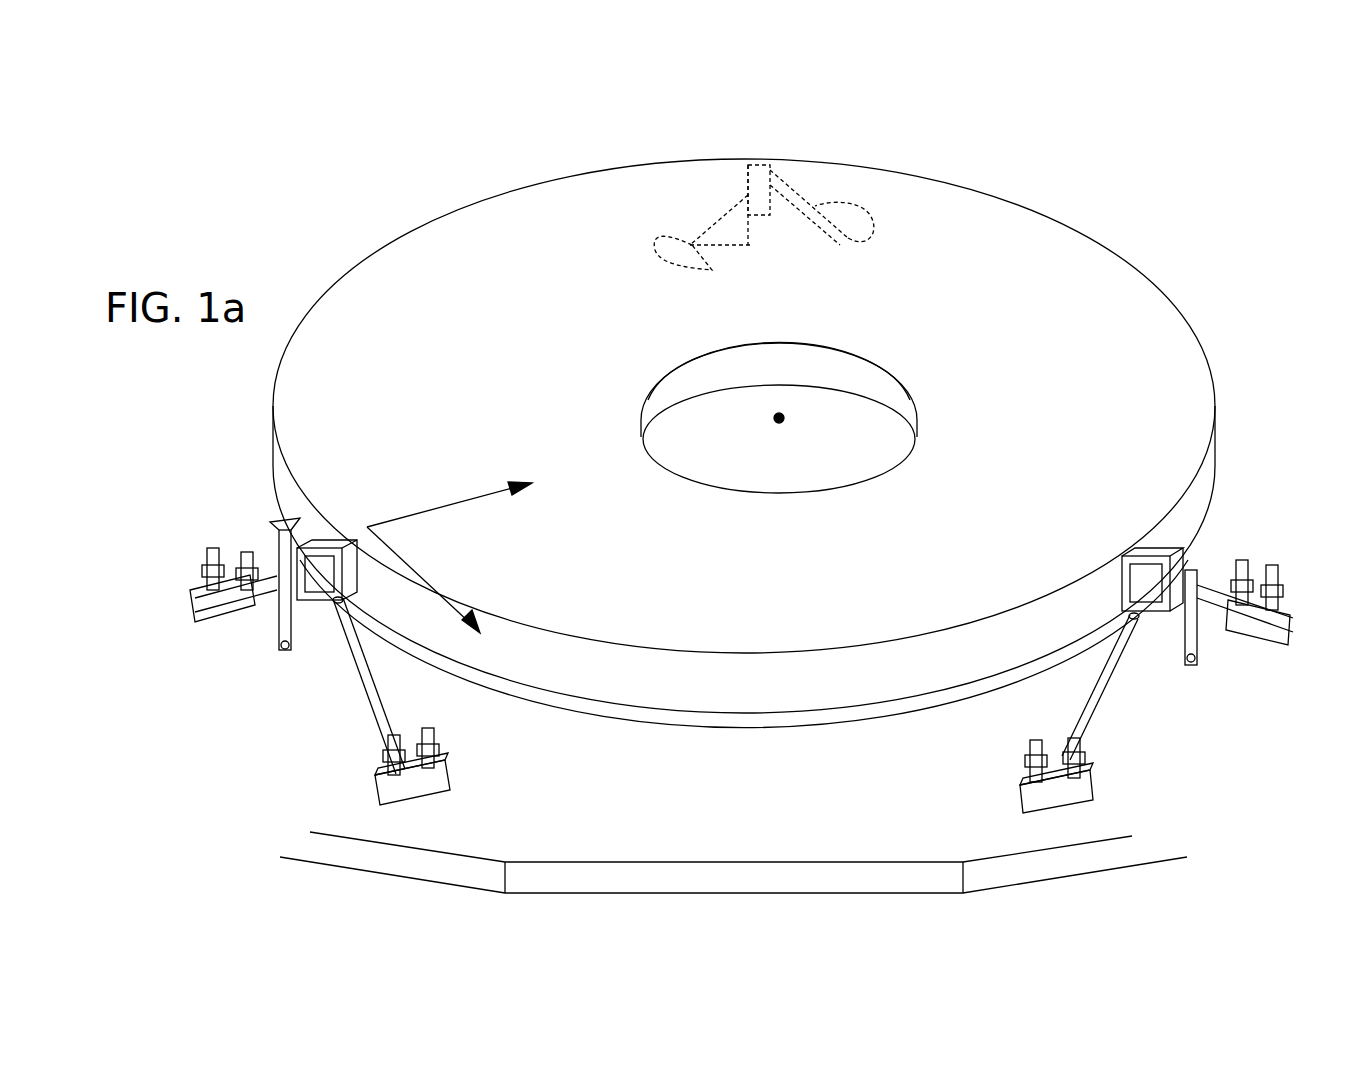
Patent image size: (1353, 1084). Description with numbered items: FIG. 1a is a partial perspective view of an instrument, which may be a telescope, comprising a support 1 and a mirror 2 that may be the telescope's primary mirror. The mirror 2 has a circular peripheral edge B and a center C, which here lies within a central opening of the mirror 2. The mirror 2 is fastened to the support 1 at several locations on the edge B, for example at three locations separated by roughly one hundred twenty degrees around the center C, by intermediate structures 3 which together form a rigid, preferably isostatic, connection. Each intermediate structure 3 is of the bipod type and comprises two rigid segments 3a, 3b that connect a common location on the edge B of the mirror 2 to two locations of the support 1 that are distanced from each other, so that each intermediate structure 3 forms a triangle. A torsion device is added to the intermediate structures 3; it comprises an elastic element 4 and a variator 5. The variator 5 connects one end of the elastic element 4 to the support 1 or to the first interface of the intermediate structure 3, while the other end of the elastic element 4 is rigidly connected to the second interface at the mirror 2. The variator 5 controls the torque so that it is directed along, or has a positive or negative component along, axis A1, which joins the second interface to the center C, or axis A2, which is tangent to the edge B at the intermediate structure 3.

The support 1 is at (1004, 838).
The mirror 2 is at (408, 272).
The intermediate structure 3 is at (836, 100).
The segment 3a is at (733, 205).
The segment 3b is at (805, 185).
The elastic element 4 is at (748, 235).
The variator 5 is at (732, 250).
The axis A1 is at (445, 503).
The axis A2 is at (418, 578).
The peripheral edge B is at (1097, 238).
The center C is at (779, 417).